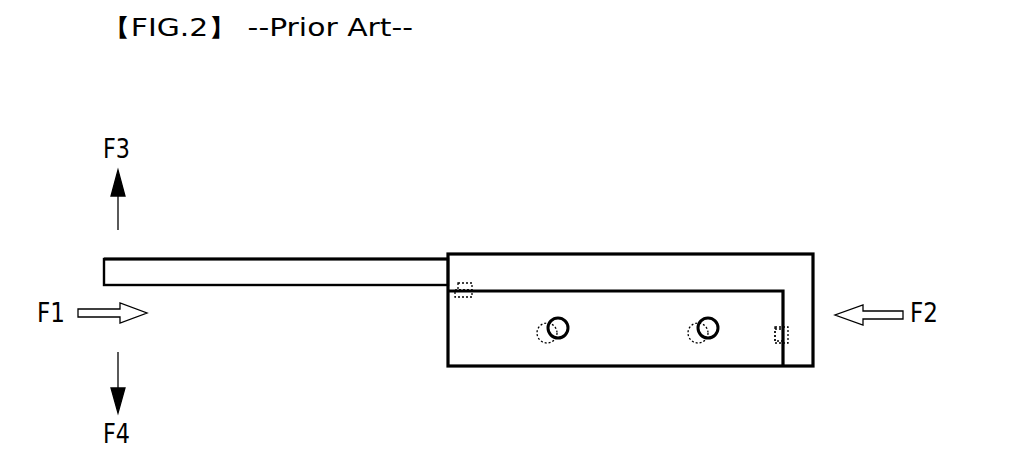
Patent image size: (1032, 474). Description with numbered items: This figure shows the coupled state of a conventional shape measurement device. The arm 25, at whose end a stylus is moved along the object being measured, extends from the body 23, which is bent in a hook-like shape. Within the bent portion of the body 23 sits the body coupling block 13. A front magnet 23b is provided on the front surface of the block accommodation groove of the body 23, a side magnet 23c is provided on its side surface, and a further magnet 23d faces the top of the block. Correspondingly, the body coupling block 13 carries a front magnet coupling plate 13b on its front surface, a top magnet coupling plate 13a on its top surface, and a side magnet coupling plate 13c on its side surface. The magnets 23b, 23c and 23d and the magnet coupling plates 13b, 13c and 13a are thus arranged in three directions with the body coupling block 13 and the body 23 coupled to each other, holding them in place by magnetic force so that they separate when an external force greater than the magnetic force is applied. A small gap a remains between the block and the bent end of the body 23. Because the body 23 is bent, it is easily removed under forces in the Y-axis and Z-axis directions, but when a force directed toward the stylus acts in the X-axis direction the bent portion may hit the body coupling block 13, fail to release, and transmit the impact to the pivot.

The arm 25 is at (217, 265).
The body 23 is at (675, 263).
The body coupling block 13 is at (644, 350).
The magnet 23d is at (463, 283).
The top magnet coupling plate 13a is at (460, 298).
The front magnet 23b is at (558, 318).
The front magnet coupling plate 13b is at (548, 343).
The side magnet 23c is at (788, 333).
The side magnet coupling plate 13c is at (775, 333).
The gap between inner body and outer body a is at (799, 358).